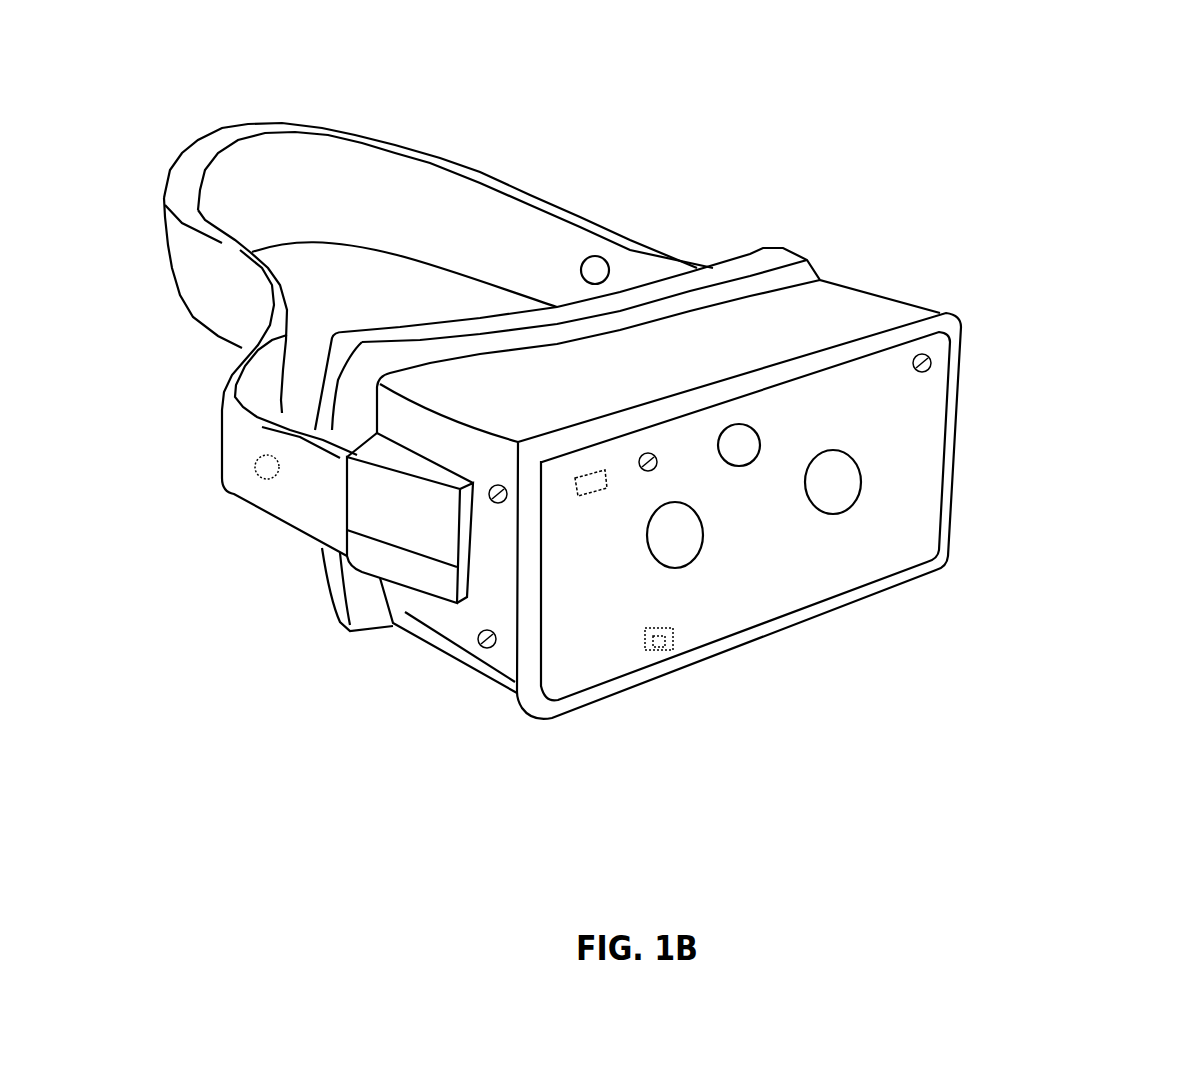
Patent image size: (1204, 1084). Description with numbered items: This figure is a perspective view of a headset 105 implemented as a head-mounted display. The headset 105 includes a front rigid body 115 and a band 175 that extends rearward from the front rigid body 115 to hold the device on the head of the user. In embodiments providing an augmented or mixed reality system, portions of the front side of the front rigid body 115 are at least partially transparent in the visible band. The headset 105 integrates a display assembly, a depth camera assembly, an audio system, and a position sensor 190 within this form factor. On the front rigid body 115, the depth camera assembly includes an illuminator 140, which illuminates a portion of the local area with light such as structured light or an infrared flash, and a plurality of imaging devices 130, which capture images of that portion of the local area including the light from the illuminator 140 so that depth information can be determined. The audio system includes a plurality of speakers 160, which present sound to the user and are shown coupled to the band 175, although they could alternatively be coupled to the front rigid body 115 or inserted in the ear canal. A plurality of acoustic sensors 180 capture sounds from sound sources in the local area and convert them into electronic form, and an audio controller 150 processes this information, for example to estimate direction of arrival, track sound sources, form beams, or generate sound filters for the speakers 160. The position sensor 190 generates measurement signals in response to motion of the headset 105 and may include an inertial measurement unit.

The headset 105 is at (676, 466).
The band 175 is at (571, 208).
The front rigid body 115 is at (955, 314).
The illuminator 140 is at (753, 431).
The imaging devices 130 is at (697, 557).
The audio controller 150 is at (574, 496).
The speakers 160 is at (255, 478).
The acoustic sensors 180 is at (478, 642).
The position sensor 190 is at (673, 640).